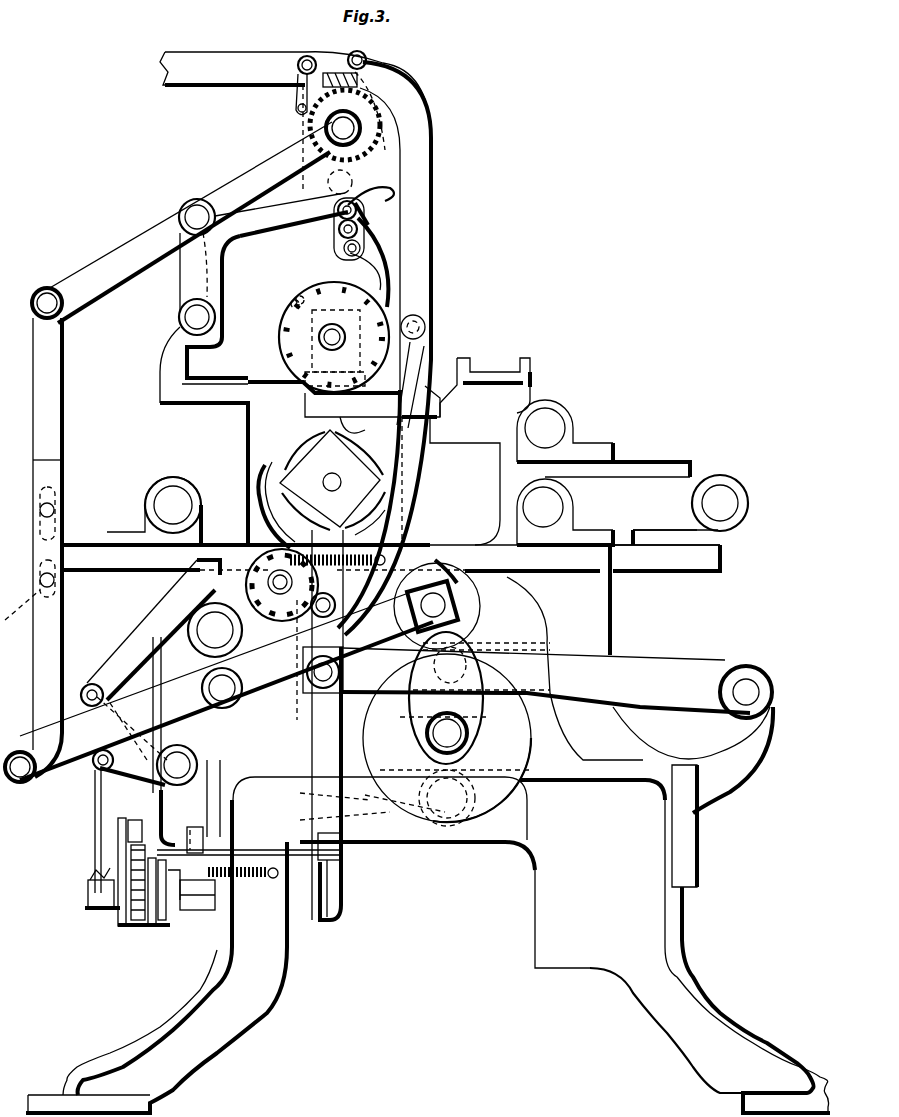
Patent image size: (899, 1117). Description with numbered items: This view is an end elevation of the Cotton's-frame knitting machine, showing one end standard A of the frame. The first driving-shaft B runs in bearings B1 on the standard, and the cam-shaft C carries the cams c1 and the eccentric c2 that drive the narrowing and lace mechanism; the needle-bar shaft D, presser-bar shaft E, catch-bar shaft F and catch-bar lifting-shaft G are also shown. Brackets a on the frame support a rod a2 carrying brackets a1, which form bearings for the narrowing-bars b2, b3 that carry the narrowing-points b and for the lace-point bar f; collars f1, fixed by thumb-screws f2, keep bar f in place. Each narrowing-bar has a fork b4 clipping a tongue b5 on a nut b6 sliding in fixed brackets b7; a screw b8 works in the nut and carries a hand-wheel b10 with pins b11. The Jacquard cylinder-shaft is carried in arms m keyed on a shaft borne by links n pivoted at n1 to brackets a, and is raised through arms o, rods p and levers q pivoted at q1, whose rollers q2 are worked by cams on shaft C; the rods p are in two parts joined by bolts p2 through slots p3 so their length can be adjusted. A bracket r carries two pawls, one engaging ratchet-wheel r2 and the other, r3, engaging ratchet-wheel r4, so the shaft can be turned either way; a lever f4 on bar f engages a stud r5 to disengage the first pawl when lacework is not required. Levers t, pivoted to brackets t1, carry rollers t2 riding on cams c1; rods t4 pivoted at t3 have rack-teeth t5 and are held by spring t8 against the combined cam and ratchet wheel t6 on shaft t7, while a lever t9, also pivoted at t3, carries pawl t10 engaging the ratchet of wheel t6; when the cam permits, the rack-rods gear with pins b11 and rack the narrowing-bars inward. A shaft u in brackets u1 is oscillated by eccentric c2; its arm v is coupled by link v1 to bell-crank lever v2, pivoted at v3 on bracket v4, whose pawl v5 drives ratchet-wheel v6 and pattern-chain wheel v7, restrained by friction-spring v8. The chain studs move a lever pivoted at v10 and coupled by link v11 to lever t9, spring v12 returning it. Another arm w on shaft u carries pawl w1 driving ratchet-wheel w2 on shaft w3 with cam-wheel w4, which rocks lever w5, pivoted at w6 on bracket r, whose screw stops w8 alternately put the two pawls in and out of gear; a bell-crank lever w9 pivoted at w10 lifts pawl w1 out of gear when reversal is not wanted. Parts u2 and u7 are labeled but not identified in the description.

The end standard A is at (428, 720).
The first driving-shaft B is at (720, 503).
The bearing B1 is at (675, 537).
The cam-shaft C is at (447, 733).
The cam c1 is at (475, 698).
The cam or eccentric c2 is at (447, 740).
The needle-bar shaft D is at (545, 428).
The presser-bar shaft E is at (543, 507).
The catch-bar shaft F is at (173, 505).
The catch-bar lifting-shaft G is at (215, 630).
The bracket a is at (257, 281).
The bracket a1 is at (341, 255).
The rod a2 is at (349, 215).
The narrowing-points b is at (290, 352).
The narrowing-bar b2 is at (338, 231).
The narrowing-bar b3 is at (364, 271).
The fork b4 is at (366, 212).
The tongue b5 is at (376, 262).
The nut b6 is at (336, 344).
The fixed bracket b7 is at (305, 390).
The screw b8 is at (343, 336).
The hand-wheel b10 is at (308, 300).
The pin b11 is at (292, 300).
The lace-point bar f is at (343, 128).
The collar f1 is at (371, 185).
The thumb-screw f2 is at (338, 212).
The lever f4 is at (300, 130).
The arm m is at (233, 191).
The link n is at (210, 290).
The pivot n1 is at (197, 317).
The arm o is at (190, 222).
The rod p is at (62, 437).
The bolt p2 is at (40, 510).
The elongated slot p3 is at (40, 590).
The lever q is at (226, 682).
The pivot q1 is at (235, 688).
The roller q2 is at (432, 596).
The bracket r is at (301, 240).
The ratchet-wheel r2 is at (350, 125).
The pawl r3 is at (365, 63).
The ratchet-wheel r4 is at (300, 96).
The stud r5 is at (299, 112).
The lever t is at (557, 683).
The bracket t1 is at (693, 760).
The roller t2 is at (443, 606).
The pivot t3 is at (315, 683).
The rack-rod t4 is at (373, 513).
The rack-teeth t5 is at (357, 414).
The combined cam and ratchet wheel t6 is at (332, 480).
The shaft t7 is at (334, 473).
The spring t8 is at (337, 547).
The lever t9 is at (320, 725).
The pawl t10 is at (262, 500).
The shaft u is at (177, 765).
The bracket u1 is at (210, 797).
The lever u2 is at (185, 748).
The pivot u7 is at (332, 603).
The arm v is at (95, 771).
The link v1 is at (97, 827).
The bell-crank lever v2 is at (112, 912).
The pivot v3 is at (212, 898).
The bracket v4 is at (190, 885).
The pawl v5 is at (118, 852).
The ratchet-wheel v6 is at (142, 897).
The pattern-chain wheel v7 is at (160, 920).
The friction-spring v8 is at (170, 912).
The pivot v10 is at (205, 840).
The link v11 is at (270, 848).
The spring v12 is at (245, 880).
The arm w is at (124, 722).
The pawl w1 is at (151, 630).
The ratchet-wheel w2 is at (208, 580).
The short shaft w3 is at (282, 585).
The cam-wheel w4 is at (284, 596).
The lever w5 is at (431, 218).
The pivot w6 is at (425, 325).
The adjustable screw stop w8 is at (317, 64).
The bell-crank lever w9 is at (170, 741).
The pivot w10 is at (190, 836).